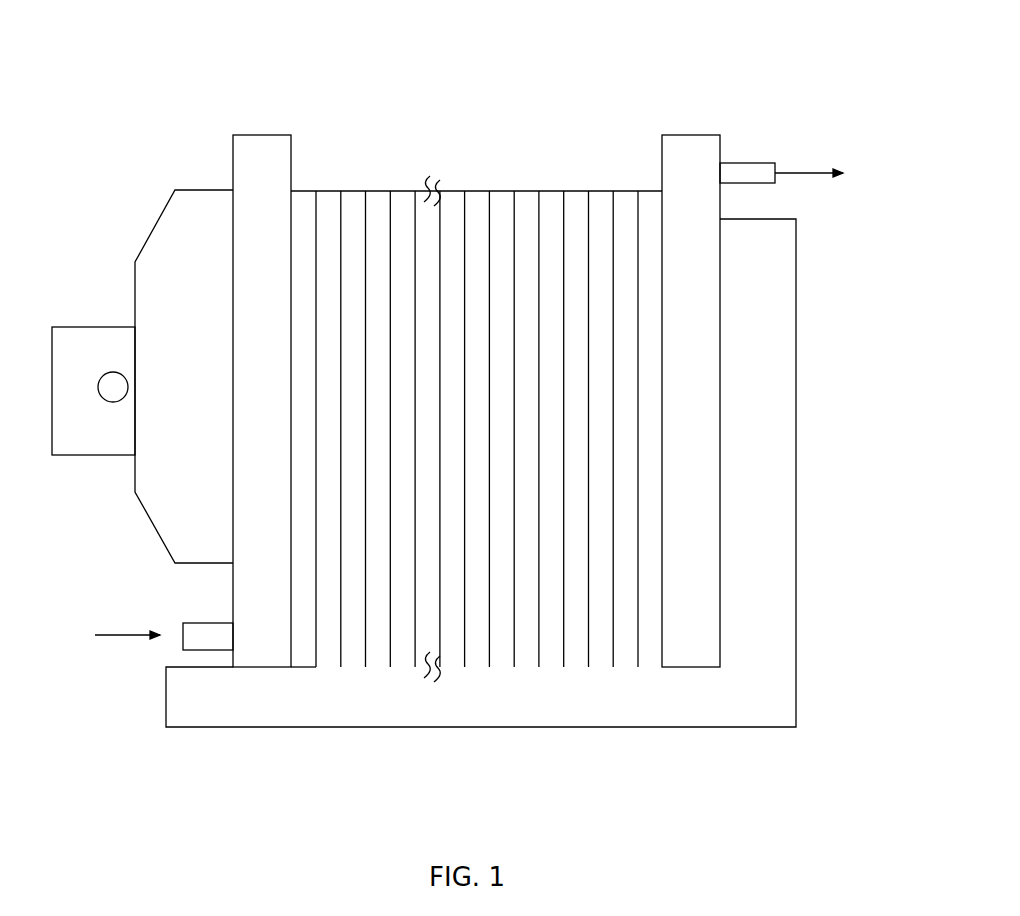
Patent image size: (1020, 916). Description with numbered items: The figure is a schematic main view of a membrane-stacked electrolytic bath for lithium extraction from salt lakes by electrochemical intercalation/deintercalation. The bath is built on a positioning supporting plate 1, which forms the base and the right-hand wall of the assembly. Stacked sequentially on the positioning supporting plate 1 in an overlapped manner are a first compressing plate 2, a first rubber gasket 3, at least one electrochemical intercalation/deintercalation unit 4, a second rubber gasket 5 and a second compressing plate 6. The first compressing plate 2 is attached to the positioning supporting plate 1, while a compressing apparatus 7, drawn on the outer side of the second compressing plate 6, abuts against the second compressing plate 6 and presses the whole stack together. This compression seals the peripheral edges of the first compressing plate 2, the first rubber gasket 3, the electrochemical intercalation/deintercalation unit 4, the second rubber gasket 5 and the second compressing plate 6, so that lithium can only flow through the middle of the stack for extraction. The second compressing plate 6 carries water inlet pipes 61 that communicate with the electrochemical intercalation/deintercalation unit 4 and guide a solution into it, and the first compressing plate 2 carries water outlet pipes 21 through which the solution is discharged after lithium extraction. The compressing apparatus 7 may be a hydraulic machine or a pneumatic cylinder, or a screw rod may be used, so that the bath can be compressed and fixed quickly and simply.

The positioning supporting plate 1 is at (796, 408).
The first compressing plate 2 is at (698, 152).
The water outlet pipes 21 is at (758, 163).
The first rubber gasket 3 is at (648, 200).
The electrochemical intercalation/deintercalation unit 4 is at (500, 193).
The second rubber gasket 5 is at (305, 205).
The second compressing plate 6 is at (252, 158).
The water inlet pipes 61 is at (205, 634).
The compressing apparatus 7 is at (175, 262).